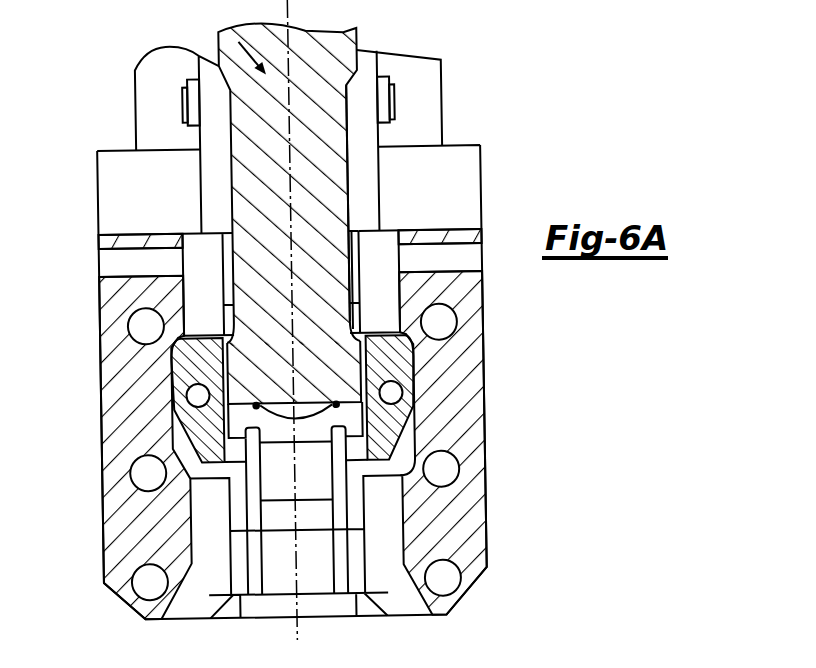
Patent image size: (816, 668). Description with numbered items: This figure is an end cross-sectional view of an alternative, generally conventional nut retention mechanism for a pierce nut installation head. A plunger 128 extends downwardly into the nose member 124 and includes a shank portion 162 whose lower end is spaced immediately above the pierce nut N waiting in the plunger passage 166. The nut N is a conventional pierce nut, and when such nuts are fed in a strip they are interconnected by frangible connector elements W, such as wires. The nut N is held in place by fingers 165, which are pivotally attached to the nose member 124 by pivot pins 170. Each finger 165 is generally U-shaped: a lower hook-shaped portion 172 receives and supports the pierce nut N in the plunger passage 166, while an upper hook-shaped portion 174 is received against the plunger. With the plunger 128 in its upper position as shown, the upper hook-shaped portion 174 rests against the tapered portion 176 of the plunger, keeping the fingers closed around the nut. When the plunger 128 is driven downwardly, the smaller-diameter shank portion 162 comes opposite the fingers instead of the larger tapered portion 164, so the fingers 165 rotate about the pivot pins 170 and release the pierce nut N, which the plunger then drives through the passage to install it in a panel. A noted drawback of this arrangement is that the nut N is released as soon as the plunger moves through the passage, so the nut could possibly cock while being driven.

The nose member 124 is at (101, 409).
The plunger 128 is at (223, 31).
The shank portion 162 is at (338, 172).
The tapered portion 164 is at (356, 271).
The fingers 165 is at (170, 393).
The plunger passage 166 is at (186, 299).
The pivot pins 170 is at (419, 375).
The lower hook-shaped portion 172 is at (241, 462).
The upper hook-shaped portion 174 is at (226, 342).
The tapered portion 176 is at (364, 328).
The frangible connector elements W is at (296, 414).
The pierce nut N is at (301, 443).